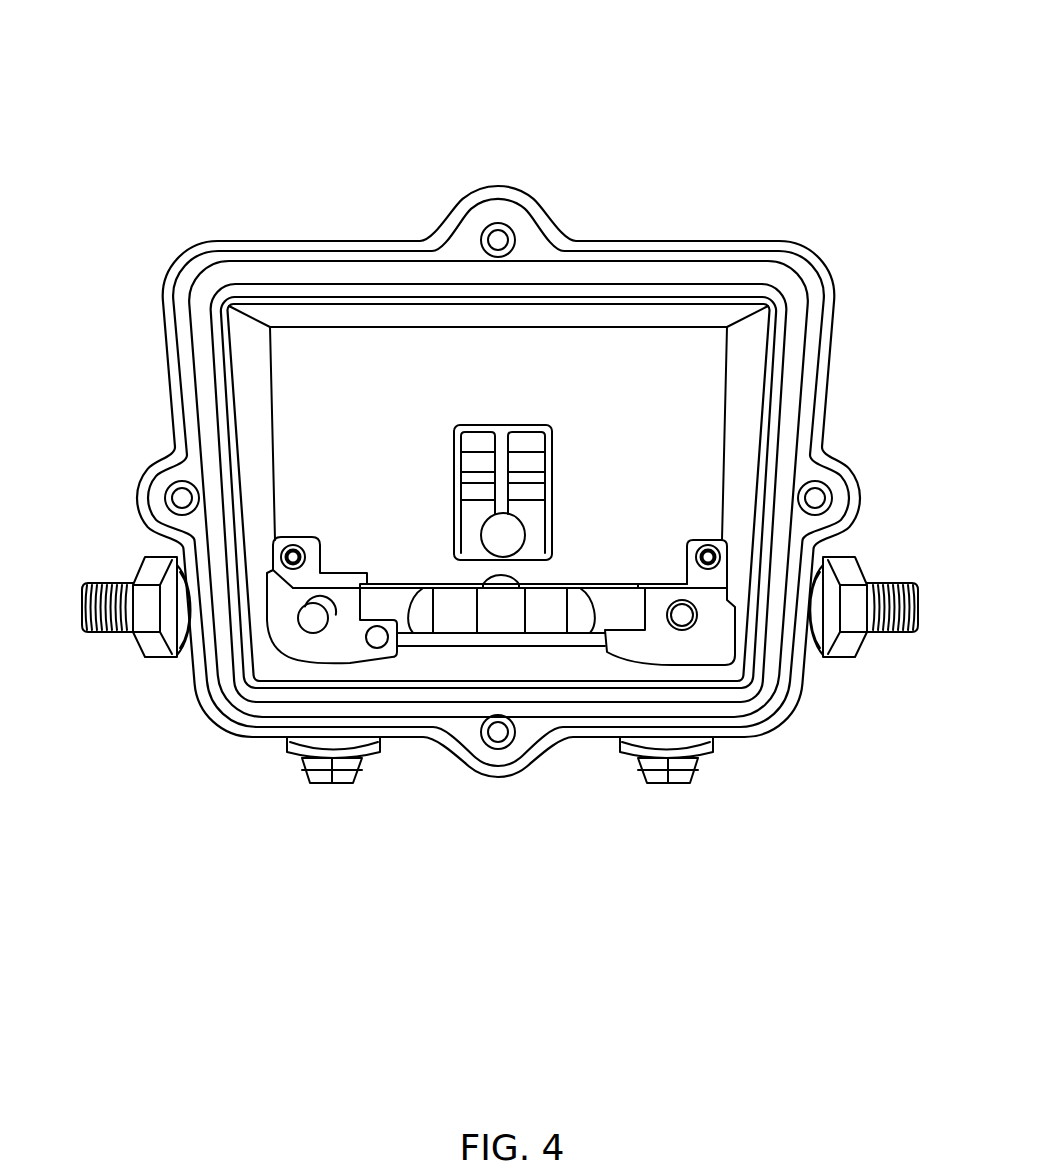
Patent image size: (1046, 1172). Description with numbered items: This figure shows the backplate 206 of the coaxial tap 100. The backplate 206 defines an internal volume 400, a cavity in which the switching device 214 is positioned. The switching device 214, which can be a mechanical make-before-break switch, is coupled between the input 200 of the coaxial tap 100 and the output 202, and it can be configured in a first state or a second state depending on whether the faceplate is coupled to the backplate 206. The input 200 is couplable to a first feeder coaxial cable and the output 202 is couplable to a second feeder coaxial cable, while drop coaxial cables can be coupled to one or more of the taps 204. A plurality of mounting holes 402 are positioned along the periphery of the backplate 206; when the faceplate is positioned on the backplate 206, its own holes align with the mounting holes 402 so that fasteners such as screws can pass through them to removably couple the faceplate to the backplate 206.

The coaxial tap 100 is at (683, 97).
The input 200 is at (104, 646).
The output 202 is at (891, 646).
The taps 204 is at (320, 797).
The backplate 206 is at (777, 224).
The switching device 214 is at (399, 574).
The internal volume 400 is at (248, 397).
The mounting holes 402 is at (496, 240).